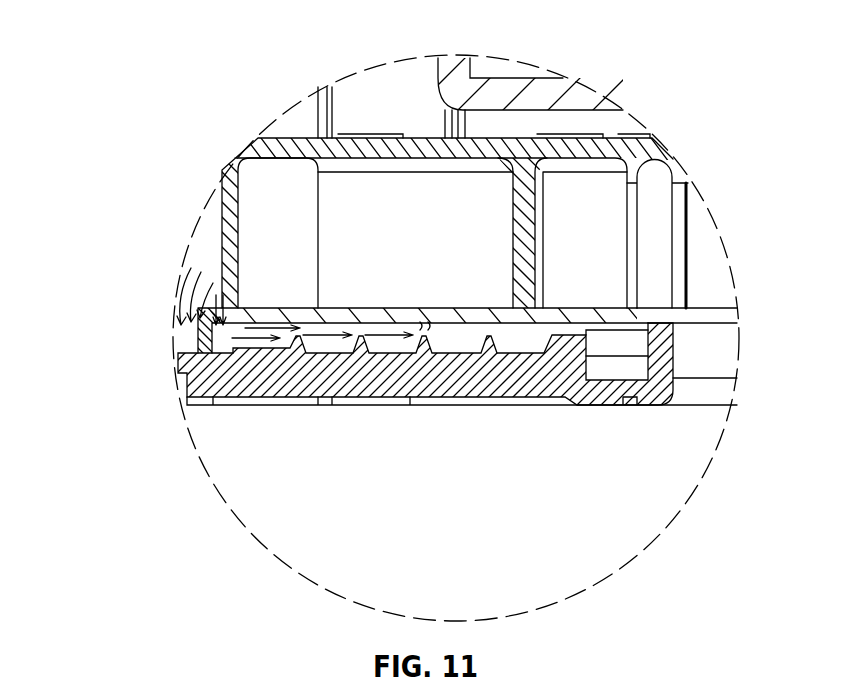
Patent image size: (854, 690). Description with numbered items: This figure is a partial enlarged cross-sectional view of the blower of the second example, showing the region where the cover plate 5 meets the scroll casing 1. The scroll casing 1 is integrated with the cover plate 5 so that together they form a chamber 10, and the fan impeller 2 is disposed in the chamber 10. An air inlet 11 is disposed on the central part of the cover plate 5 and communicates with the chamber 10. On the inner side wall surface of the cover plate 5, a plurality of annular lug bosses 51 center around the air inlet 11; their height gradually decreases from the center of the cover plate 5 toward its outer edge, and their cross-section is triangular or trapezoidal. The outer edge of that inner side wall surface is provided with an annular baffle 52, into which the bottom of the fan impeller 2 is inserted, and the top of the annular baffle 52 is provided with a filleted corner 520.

The scroll casing 1 is at (497, 100).
The chamber 10 is at (387, 102).
The fan impeller 2 is at (600, 148).
The cover plate 5 is at (370, 373).
The annular lug bosses 51 is at (552, 343).
The annular baffle 52 is at (198, 333).
The filleted corner 520 is at (190, 308).
The air inlet 11 is at (700, 347).